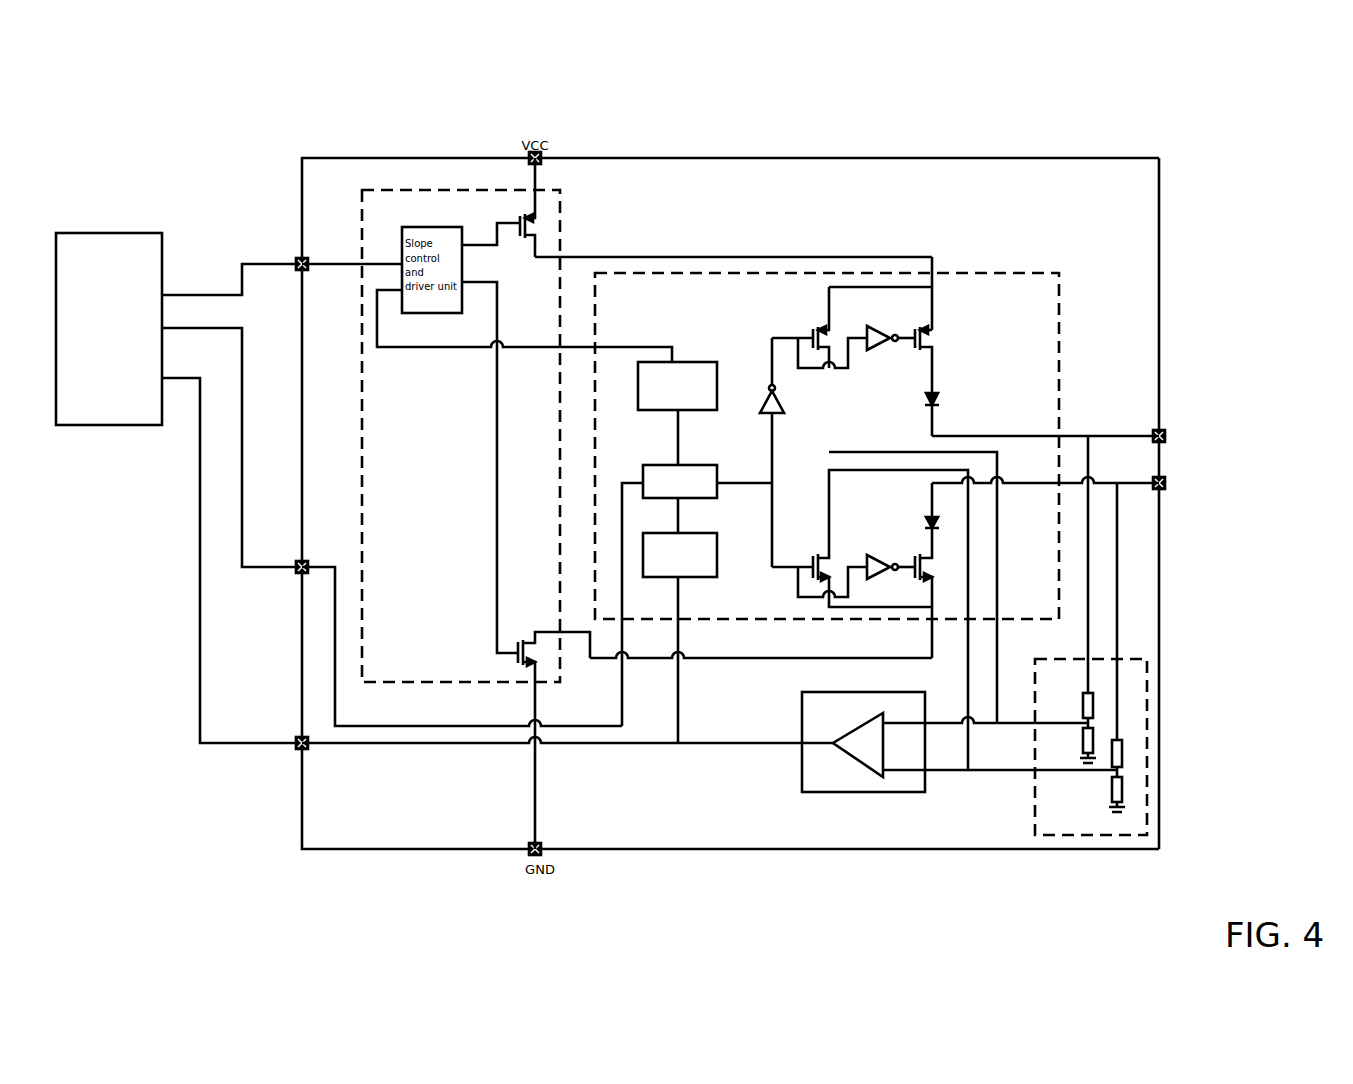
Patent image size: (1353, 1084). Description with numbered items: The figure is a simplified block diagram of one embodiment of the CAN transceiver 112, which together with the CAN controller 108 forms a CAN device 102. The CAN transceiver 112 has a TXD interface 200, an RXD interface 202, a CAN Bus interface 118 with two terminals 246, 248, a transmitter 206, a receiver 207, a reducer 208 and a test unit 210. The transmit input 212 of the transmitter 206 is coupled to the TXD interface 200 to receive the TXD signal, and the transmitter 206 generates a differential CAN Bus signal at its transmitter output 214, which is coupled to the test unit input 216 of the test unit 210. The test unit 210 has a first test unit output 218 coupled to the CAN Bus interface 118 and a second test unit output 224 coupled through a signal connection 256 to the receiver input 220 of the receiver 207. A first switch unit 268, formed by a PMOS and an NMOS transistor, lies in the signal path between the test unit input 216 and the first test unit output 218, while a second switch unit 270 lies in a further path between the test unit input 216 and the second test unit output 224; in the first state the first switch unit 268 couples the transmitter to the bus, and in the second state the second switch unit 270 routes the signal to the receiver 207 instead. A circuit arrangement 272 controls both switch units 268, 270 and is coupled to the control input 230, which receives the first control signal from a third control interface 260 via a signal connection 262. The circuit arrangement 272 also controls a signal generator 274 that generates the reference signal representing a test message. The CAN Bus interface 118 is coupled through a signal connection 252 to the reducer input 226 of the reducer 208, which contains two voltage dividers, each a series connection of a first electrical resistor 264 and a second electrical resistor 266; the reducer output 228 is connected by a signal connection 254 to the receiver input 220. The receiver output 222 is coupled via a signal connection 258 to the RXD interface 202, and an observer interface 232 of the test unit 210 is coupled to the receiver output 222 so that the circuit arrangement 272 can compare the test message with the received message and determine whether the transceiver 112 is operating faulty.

The CAN device 102 is at (1196, 102).
The CAN controller 108 is at (86, 230).
The CAN transceiver 112 is at (1163, 291).
The CAN Bus interface 118 is at (1229, 462).
The TXD interface 200 is at (299, 257).
The RXD interface 202 is at (288, 761).
The transmitter 206 is at (369, 186).
The receiver 207 is at (840, 799).
The reducer 208 is at (1152, 733).
The test unit 210 is at (1052, 262).
The transmit input 212 is at (357, 255).
The transmitter output 214 is at (574, 249).
The test unit input 216 is at (940, 263).
The first test unit output 218 is at (959, 423).
The receiver input 220 is at (913, 733).
The receiver output 222 is at (797, 764).
The second test unit output 224 is at (1008, 633).
The reducer input 226 is at (1095, 655).
The reducer output 228 is at (1028, 735).
The control input 230 is at (613, 631).
The observer interface 232 is at (668, 633).
The terminal 246 is at (1169, 427).
The terminal 248 is at (1169, 490).
The signal connection 252 is at (1128, 542).
The signal connection 254 is at (1007, 731).
The signal connection 256 is at (987, 667).
The signal connection 258 is at (370, 749).
The third control interface 260 is at (286, 574).
The signal connection 262 is at (432, 736).
The first electrical resistor 264 is at (1101, 702).
The second electrical resistor 266 is at (1103, 742).
The first switch unit 268 is at (919, 311).
The second switch unit 270 is at (819, 312).
The circuit arrangement 272 is at (640, 461).
The signal generator 274 is at (694, 358).